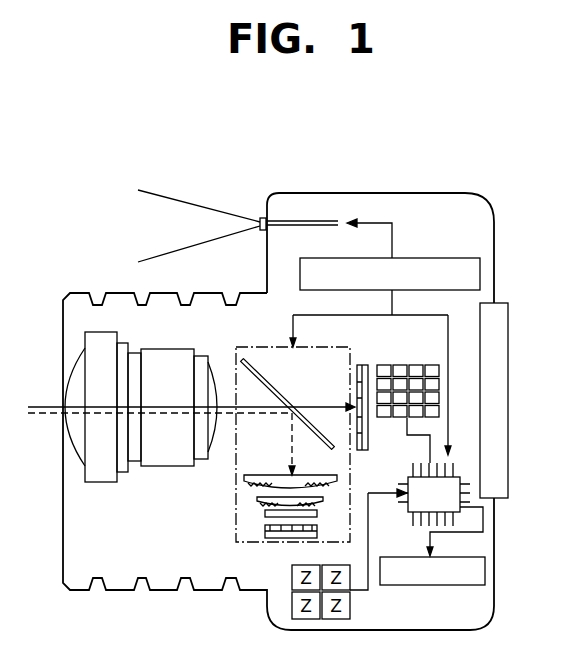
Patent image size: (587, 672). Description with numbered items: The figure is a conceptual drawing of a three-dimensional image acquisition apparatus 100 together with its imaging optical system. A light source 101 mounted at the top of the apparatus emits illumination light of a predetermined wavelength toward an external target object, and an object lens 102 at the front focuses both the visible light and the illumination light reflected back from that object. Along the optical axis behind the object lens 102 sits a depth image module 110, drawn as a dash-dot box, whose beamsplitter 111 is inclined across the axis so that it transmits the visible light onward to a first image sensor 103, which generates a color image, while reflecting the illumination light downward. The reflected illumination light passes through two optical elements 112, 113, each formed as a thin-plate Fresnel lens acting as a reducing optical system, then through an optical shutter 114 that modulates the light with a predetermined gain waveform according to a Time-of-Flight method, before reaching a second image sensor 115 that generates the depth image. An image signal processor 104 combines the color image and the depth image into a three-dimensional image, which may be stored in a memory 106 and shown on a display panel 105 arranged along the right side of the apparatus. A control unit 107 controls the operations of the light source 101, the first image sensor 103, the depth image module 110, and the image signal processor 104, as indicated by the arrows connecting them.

The 3D image acquisition apparatus 100 is at (518, 165).
The light source 101 is at (262, 217).
The object lens 102 is at (146, 485).
The first image sensor 103 is at (366, 366).
The image signal processor 104 is at (450, 505).
The display panel 105 is at (508, 409).
The memory 106 is at (485, 572).
The control unit 107 is at (480, 275).
The depth image module 110 is at (260, 346).
The beamsplitter 111 is at (282, 396).
The optical element 112 is at (244, 479).
The optical element 113 is at (257, 500).
The optical shutter 114 is at (265, 514).
The second image sensor 115 is at (266, 532).